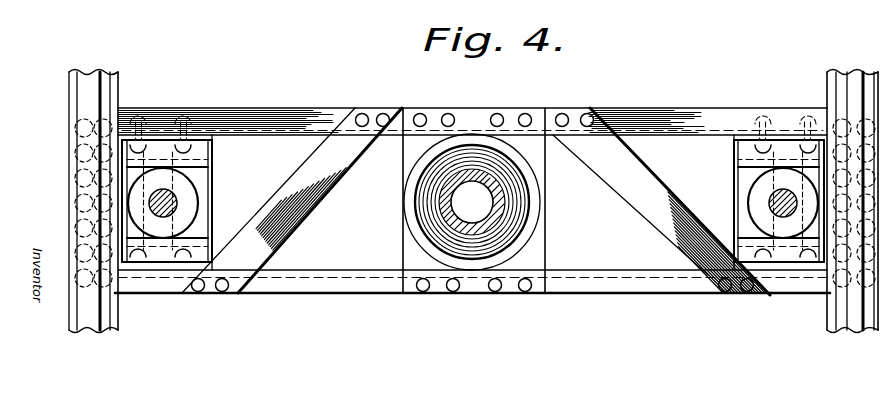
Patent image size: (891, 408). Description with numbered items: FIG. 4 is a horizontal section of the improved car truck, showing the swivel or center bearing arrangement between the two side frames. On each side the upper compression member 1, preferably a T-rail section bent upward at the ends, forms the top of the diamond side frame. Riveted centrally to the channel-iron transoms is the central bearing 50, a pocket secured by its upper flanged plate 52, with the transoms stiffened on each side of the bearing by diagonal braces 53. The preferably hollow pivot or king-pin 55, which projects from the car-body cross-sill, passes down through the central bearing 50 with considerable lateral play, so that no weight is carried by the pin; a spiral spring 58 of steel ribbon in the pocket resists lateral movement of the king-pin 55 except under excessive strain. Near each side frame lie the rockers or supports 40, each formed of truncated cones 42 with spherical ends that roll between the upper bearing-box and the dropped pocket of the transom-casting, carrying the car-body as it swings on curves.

The upper compression member 1 is at (90, 92).
The rocker 40 is at (178, 199).
The truncated cone 42 is at (195, 190).
The central bearing 50 is at (420, 175).
The upper flanged plate 52 is at (418, 140).
The diagonal brace 53 is at (312, 208).
The pivot or king-pin 55 is at (503, 202).
The spiral spring 58 is at (428, 198).